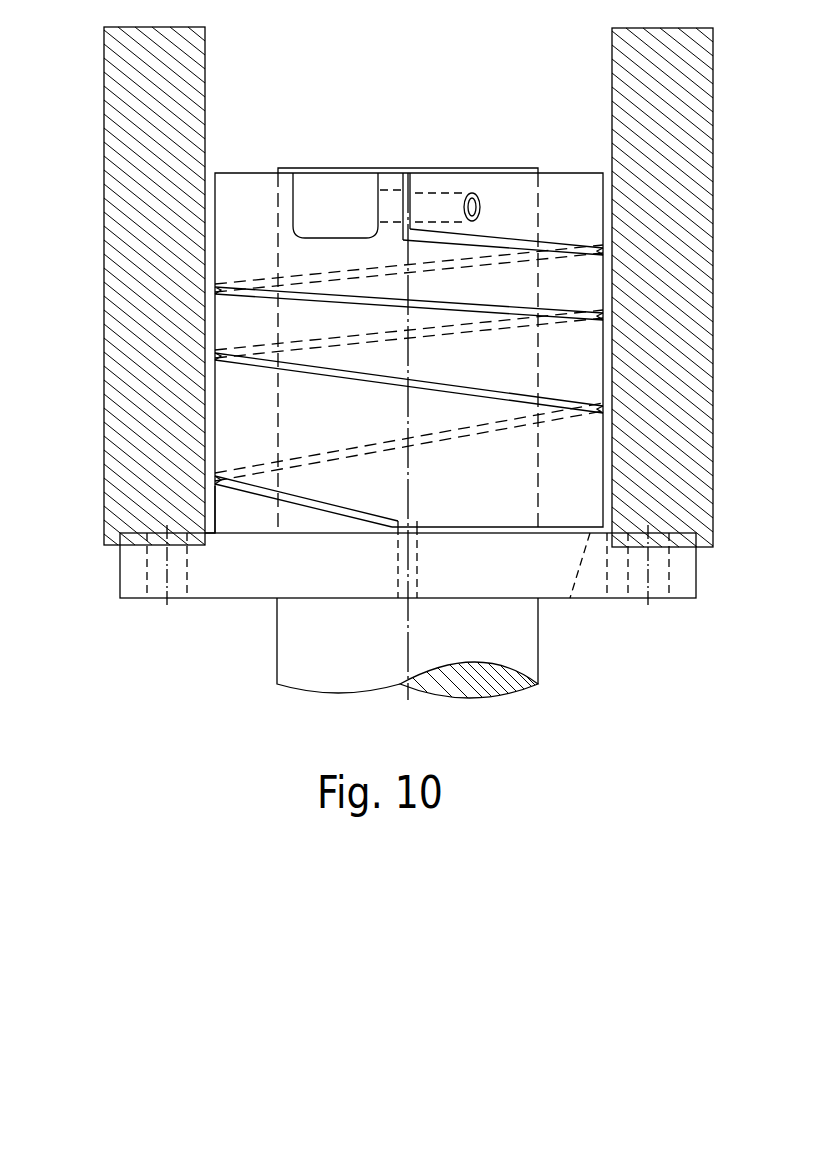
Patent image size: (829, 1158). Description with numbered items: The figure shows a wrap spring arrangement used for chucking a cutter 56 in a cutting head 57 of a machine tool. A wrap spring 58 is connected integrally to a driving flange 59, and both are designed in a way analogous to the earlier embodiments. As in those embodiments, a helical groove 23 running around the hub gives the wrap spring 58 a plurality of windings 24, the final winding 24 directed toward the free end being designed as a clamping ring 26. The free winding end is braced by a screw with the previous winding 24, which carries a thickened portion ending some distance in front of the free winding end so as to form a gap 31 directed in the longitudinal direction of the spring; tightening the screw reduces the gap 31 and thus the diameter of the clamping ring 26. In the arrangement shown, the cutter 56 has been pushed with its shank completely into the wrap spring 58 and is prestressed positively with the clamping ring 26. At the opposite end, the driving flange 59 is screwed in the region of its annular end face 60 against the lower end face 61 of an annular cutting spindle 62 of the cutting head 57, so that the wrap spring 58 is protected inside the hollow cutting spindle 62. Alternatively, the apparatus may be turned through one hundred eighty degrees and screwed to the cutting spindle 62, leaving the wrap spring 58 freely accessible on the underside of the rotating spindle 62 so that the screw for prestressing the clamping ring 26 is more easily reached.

The helical groove 23 is at (215, 286).
The windings 24 is at (80, 346).
The clamping ring 26 is at (512, 198).
The gap 31 is at (408, 168).
The cutter 56 is at (518, 622).
The cutting head 57 is at (505, 98).
The wrap spring 58 is at (250, 152).
The driving flange 59 is at (210, 583).
The annular end face 60 is at (205, 530).
The end face 61 is at (713, 555).
The cutting spindle 62 is at (175, 53).